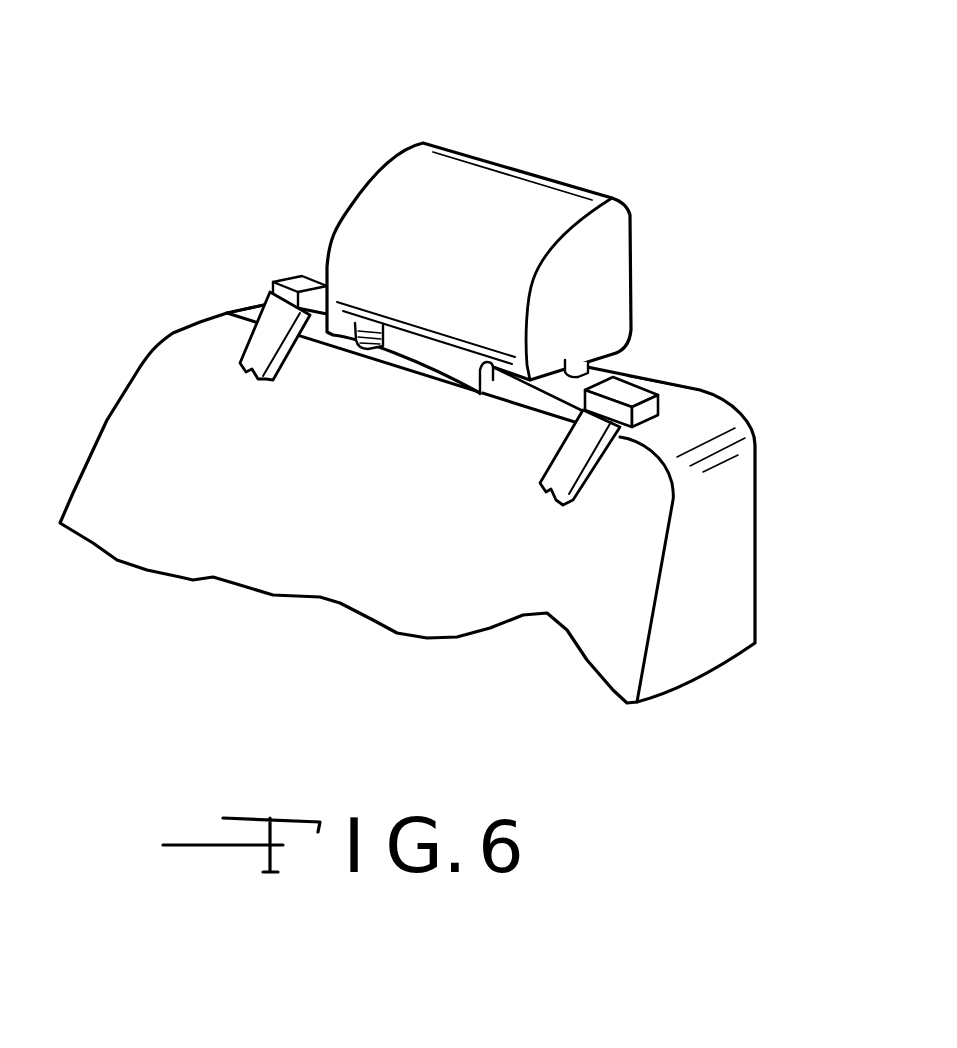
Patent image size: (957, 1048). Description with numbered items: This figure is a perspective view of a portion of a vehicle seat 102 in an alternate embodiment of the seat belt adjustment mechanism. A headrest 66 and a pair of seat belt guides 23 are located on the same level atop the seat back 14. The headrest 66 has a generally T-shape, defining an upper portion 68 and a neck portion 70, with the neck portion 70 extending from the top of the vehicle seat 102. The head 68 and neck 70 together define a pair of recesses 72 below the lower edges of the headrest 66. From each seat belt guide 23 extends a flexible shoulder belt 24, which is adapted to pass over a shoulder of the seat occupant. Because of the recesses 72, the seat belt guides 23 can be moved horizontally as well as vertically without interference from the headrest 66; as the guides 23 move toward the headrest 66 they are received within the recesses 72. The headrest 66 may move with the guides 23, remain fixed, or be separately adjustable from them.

The vehicle seat 102 is at (161, 163).
The seat back 14 is at (733, 497).
The headrest 66 is at (479, 202).
The upper portion 68 is at (507, 170).
The neck portion 70 is at (423, 355).
The recesses 72 is at (365, 350).
The seat belt guide 23 is at (627, 391).
The shoulder belt 24 is at (253, 340).